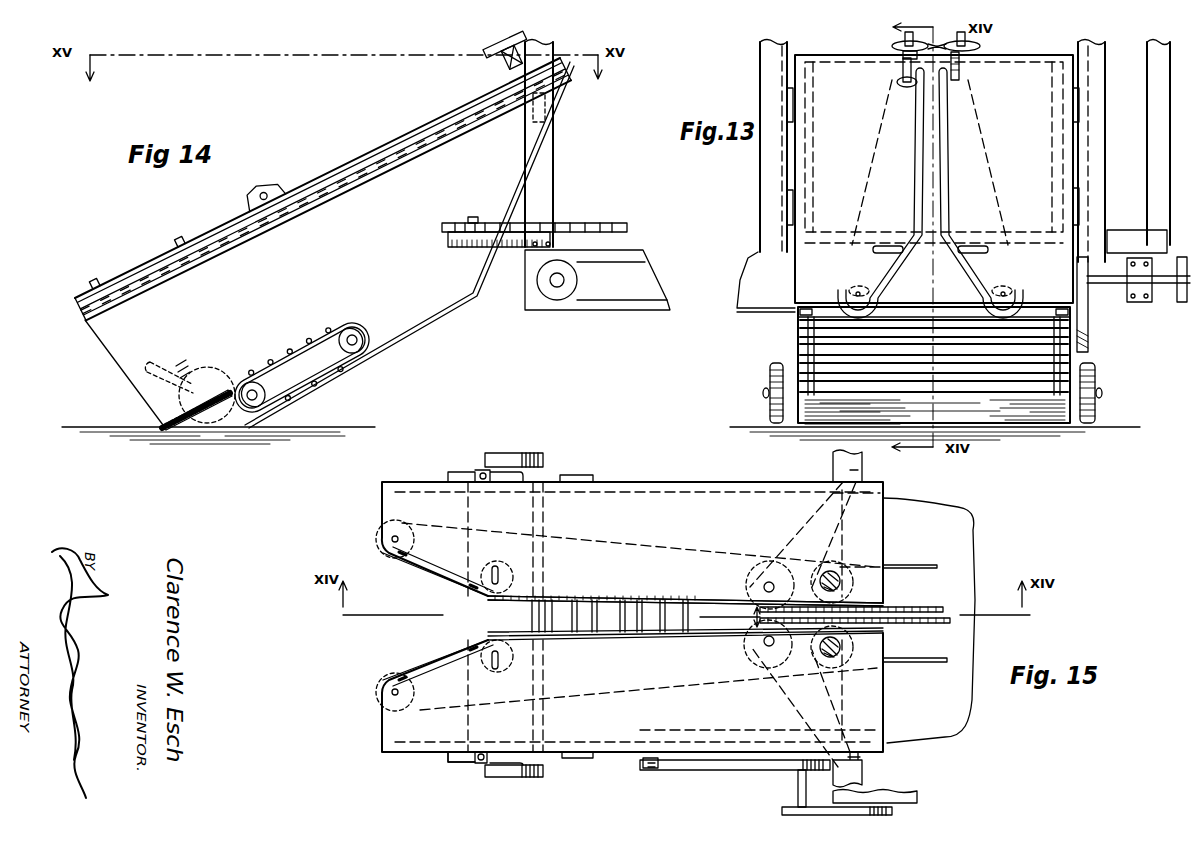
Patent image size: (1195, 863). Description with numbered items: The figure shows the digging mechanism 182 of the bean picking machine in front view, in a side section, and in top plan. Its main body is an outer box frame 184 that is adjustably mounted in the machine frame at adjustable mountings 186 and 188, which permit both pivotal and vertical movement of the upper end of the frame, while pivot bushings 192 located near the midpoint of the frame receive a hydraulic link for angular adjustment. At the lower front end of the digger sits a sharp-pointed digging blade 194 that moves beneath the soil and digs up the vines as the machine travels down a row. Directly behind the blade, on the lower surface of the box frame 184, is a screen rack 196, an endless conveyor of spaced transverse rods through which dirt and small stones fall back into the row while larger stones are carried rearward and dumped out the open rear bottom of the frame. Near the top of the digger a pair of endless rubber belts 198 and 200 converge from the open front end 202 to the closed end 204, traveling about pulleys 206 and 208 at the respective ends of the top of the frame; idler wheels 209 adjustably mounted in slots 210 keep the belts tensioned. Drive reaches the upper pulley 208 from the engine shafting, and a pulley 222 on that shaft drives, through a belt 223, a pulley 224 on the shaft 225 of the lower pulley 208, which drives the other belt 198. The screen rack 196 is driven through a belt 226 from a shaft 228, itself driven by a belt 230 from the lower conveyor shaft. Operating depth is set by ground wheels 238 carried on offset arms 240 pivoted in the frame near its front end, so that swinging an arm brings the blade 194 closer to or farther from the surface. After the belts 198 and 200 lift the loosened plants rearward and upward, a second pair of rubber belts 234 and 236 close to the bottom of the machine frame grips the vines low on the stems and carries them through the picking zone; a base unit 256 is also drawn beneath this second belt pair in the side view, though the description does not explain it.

In FIG. 15, the digging mechanism 182 is at (360, 646).
In FIG. 13, the outer box frame 184 is at (828, 177).
In FIG. 15, the outer box frame 184 is at (653, 481).
In FIG. 13, the adjustable mounting 186 is at (1078, 102).
In FIG. 15, the adjustable mounting 186 is at (862, 757).
In FIG. 13, the adjustable mounting 188 is at (790, 100).
In FIG. 15, the adjustable mounting 188 is at (862, 468).
In FIG. 13, the pivot bushings 192 is at (1078, 193).
In FIG. 15, the pivot bushings 192 is at (583, 759).
In FIG. 14, the digging blade 194 is at (178, 428).
In FIG. 13, the digging blade 194 is at (1020, 410).
In FIG. 15, the digging blade 194 is at (482, 610).
In FIG. 14, the screen rack 196 is at (307, 390).
In FIG. 13, the screen rack 196 is at (1040, 367).
In FIG. 15, the screen rack 196 is at (650, 601).
In FIG. 15, the endless rubber belt 198 is at (607, 640).
In FIG. 15, the endless rubber belt 200 is at (607, 598).
In FIG. 15, the open front end 202 is at (415, 622).
In FIG. 15, the closed end 204 is at (739, 616).
In FIG. 15, the pulley 206 is at (405, 707).
In FIG. 15, the pulley 208 is at (840, 663).
In FIG. 15, the idler wheel 209 is at (507, 660).
In FIG. 15, the slot 210 is at (494, 669).
In FIG. 13, the pulley 222 is at (892, 45).
In FIG. 13, the belt 223 is at (908, 68).
In FIG. 13, the pulley 224 is at (975, 45).
In FIG. 13, the shaft 225 is at (966, 68).
In FIG. 13, the belt 226 is at (1086, 327).
In FIG. 15, the belt 226 is at (732, 766).
In FIG. 13, the shaft 228 is at (1112, 282).
In FIG. 15, the shaft 228 is at (798, 783).
In FIG. 13, the belt 230 is at (1177, 302).
In FIG. 15, the rubber belt 234 is at (897, 625).
In FIG. 14, the rubber belt 236 is at (577, 222).
In FIG. 15, the rubber belt 236 is at (912, 607).
In FIG. 15, the ground wheel 238 is at (543, 457).
In FIG. 15, the offset arm 240 is at (463, 762).
In FIG. 14, the base unit 256 is at (597, 303).